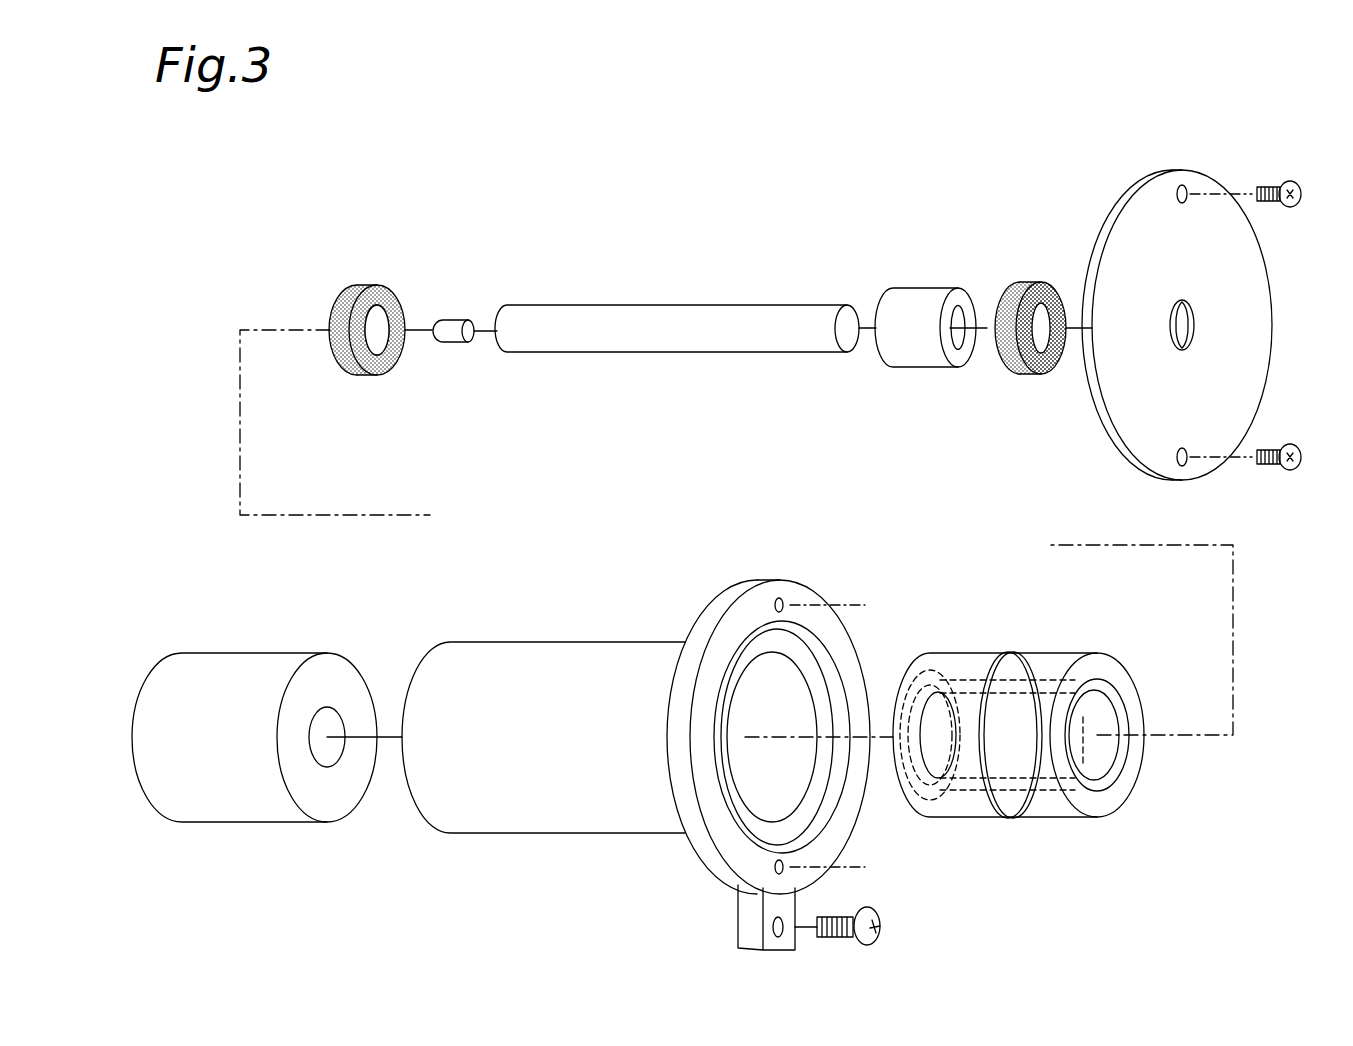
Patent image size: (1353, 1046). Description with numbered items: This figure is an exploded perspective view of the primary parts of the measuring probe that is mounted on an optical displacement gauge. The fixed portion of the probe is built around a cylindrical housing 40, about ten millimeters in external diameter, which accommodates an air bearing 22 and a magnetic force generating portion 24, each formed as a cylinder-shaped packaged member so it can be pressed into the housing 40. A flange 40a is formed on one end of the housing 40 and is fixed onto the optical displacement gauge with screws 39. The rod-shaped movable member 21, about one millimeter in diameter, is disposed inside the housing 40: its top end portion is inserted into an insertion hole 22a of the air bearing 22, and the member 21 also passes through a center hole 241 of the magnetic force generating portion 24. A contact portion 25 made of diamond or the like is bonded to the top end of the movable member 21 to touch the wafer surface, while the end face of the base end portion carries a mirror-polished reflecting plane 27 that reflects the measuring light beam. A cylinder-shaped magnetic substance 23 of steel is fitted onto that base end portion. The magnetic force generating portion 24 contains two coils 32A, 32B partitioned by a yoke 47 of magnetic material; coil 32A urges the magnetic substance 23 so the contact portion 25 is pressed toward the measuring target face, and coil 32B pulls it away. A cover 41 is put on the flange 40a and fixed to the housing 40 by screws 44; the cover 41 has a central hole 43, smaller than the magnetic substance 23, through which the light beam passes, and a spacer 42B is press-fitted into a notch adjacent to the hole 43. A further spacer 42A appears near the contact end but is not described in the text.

The movable member 21 is at (700, 305).
The air bearing 22 is at (230, 822).
The insertion hole 22a is at (323, 727).
The magnetic substance 23 is at (930, 290).
The magnetic force generating portion 24 is at (1073, 822).
The center hole 241 is at (1105, 755).
The contact portion 25 is at (452, 318).
The reflecting plane 27 is at (848, 322).
The coil 32A is at (967, 652).
The coil 32B is at (1075, 652).
The screws 39 is at (880, 925).
The housing 40 is at (568, 835).
The flange 40a is at (735, 850).
The cover 41 is at (1130, 185).
The first washer 42A is at (372, 290).
The spacer 42B is at (1028, 285).
The hole 43 is at (1195, 330).
The screws 44 is at (1290, 182).
The yoke 47 is at (1010, 820).